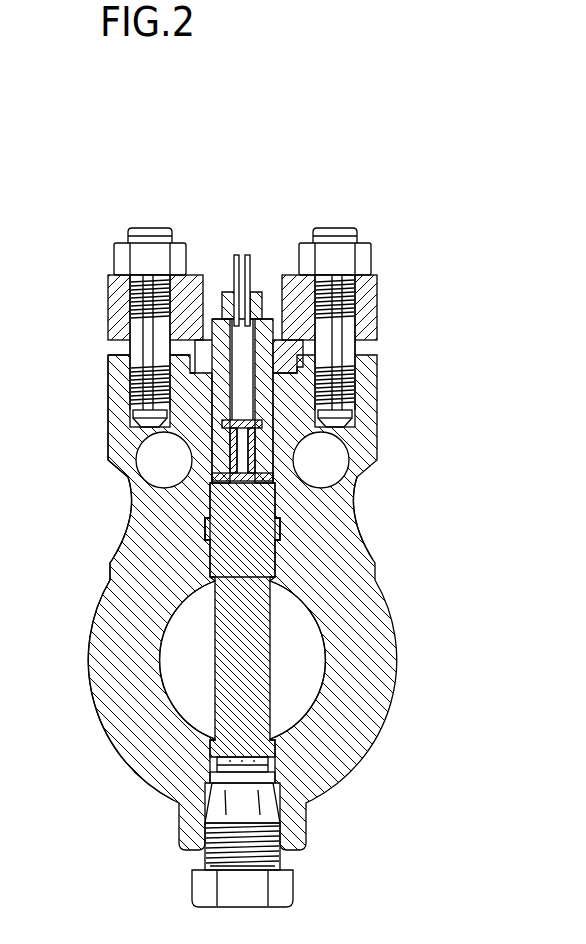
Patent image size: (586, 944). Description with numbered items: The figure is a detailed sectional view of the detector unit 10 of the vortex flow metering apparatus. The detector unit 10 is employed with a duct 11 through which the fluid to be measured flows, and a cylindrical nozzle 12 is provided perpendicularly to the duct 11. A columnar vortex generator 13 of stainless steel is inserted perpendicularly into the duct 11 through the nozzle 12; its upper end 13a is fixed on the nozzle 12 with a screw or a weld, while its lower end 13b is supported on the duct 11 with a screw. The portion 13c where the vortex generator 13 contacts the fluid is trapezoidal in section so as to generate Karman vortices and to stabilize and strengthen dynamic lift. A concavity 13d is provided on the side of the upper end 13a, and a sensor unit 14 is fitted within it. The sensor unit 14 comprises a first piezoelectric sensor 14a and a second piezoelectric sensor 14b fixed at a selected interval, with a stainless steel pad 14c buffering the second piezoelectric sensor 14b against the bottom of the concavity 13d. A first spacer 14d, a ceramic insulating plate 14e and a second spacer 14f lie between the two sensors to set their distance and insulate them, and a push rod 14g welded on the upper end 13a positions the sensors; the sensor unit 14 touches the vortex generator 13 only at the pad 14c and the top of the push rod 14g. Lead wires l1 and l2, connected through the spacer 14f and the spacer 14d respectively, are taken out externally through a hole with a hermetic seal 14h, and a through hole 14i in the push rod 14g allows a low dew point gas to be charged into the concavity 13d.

The detector unit 10 is at (396, 602).
The duct 11 is at (133, 747).
The cylindrical nozzle 12 is at (133, 582).
The columnar vortex generator 13 is at (203, 660).
The upper end 13a is at (172, 346).
The lower end 13b is at (207, 773).
The portion 13c is at (270, 657).
The concavity 13d is at (172, 400).
The sensor unit 14 is at (253, 326).
The first piezoelectric sensor 14a is at (175, 428).
The second piezoelectric sensor 14b is at (215, 476).
The pad 14c is at (282, 532).
The first spacer 14d is at (348, 508).
The insulating plate 14e is at (272, 462).
The second spacer 14f is at (268, 428).
The push rod 14g is at (322, 392).
The hermetic seal 14h is at (225, 303).
The through hole 14i is at (305, 355).
The lead wire l1 is at (236, 254).
The lead wire l2 is at (247, 254).